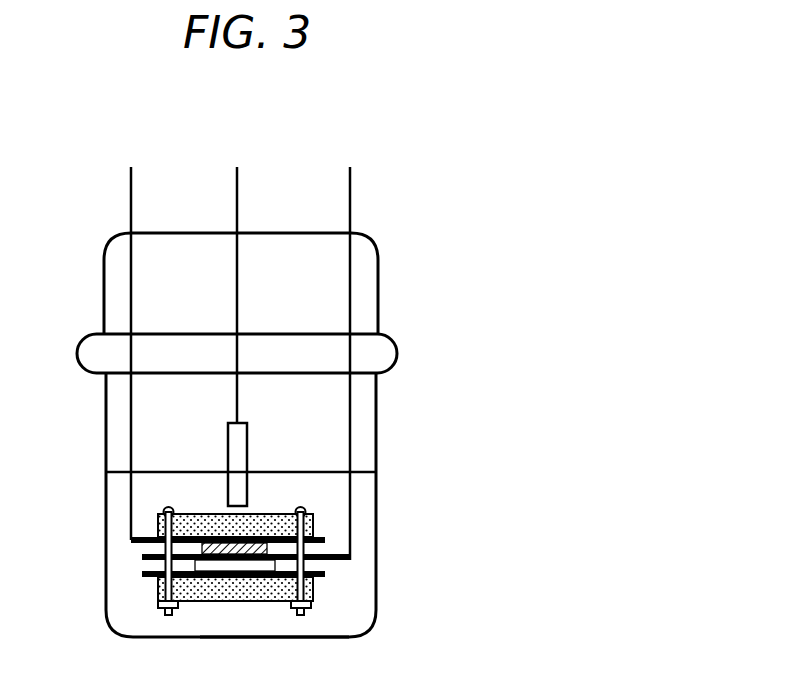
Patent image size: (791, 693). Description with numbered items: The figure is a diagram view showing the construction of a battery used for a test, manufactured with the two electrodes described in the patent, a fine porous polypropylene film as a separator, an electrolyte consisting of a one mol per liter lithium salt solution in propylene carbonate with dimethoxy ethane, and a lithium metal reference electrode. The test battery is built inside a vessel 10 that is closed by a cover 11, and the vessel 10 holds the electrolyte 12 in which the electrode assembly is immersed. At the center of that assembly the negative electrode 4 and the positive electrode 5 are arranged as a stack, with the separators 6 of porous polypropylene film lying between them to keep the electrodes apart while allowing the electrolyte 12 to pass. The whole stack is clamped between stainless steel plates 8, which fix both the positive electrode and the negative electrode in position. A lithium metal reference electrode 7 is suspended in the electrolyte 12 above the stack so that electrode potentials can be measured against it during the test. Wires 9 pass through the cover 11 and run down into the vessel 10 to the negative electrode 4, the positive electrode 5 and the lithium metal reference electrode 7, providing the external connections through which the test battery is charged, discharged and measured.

The negative electrode 4 is at (313, 527).
The positive electrode 5 is at (277, 565).
The separators 6 is at (150, 548).
The lithium metal reference electrode 7 is at (248, 462).
The stainless steel plates 8 is at (158, 519).
The wires 9 is at (131, 167).
The vessel 10 is at (379, 403).
The cover 11 is at (379, 300).
The electrolyte 12 is at (333, 638).